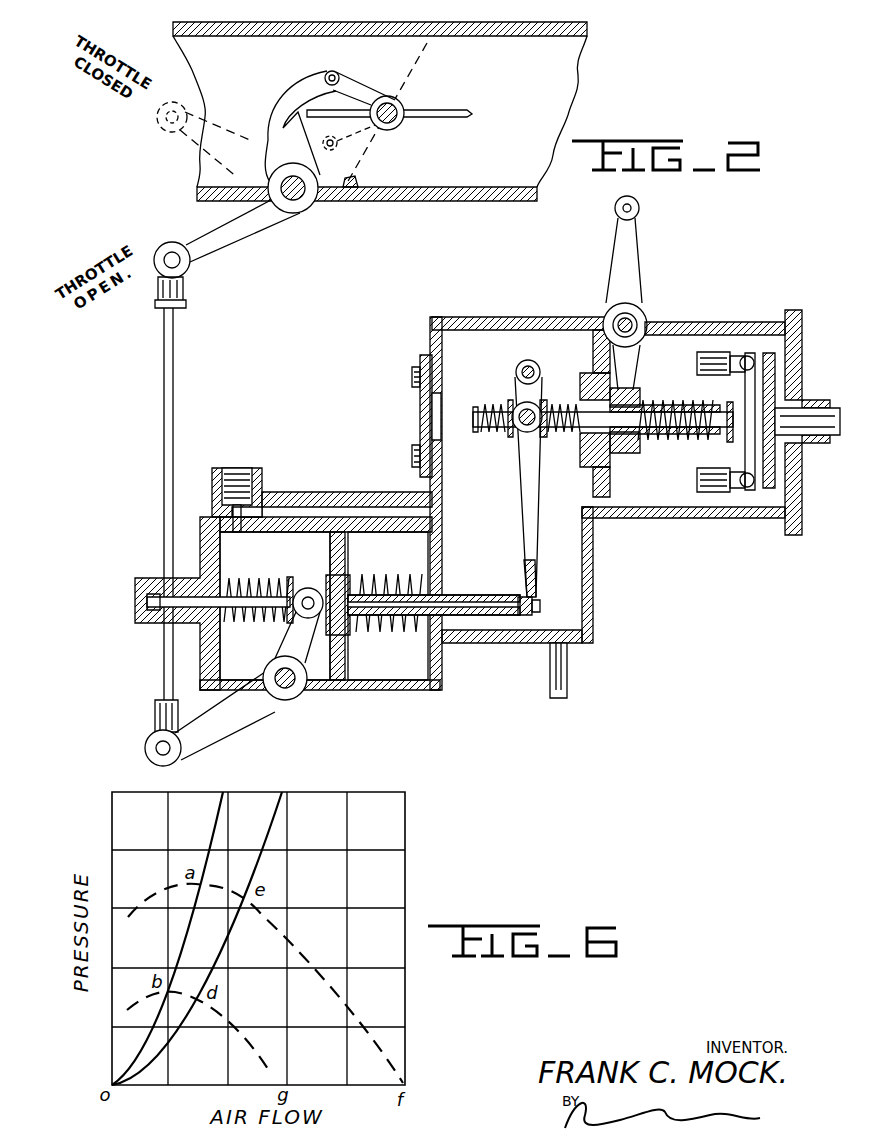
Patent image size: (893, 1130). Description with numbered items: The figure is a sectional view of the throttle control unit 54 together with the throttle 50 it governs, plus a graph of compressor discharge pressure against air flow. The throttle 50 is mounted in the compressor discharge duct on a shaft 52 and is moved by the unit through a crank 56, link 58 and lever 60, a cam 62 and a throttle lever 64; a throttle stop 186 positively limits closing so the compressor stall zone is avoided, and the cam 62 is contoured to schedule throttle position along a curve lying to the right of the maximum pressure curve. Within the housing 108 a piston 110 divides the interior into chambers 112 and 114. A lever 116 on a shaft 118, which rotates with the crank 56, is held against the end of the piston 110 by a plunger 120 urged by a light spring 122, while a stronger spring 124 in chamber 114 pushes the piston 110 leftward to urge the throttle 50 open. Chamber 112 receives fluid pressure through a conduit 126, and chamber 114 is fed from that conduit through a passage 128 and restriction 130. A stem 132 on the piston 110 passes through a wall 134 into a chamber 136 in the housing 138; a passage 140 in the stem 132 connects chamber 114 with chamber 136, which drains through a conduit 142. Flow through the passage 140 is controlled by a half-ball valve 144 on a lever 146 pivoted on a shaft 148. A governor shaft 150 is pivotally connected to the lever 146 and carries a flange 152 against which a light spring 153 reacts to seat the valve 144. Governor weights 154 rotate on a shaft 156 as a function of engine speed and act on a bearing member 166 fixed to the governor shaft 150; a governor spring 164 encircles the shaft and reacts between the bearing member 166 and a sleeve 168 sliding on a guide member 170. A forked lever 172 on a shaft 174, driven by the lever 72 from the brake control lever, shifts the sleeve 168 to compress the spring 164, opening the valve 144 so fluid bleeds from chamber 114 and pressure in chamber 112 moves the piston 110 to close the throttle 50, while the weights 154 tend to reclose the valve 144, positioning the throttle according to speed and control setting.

The throttle 50 is at (462, 108).
The shaft 52 is at (403, 100).
The throttle control unit 54 is at (395, 428).
The crank 56 is at (215, 724).
The link 58 is at (162, 488).
The lever 60 is at (258, 226).
The cam 62 is at (282, 93).
The throttle lever 64 is at (350, 84).
The lever 72 is at (615, 283).
The housing 108 is at (440, 681).
The piston 110 is at (348, 679).
The chamber 112 is at (270, 553).
The chamber 114 is at (368, 553).
The lever 116 is at (287, 636).
The shaft 118 is at (292, 690).
The plunger 120 is at (308, 588).
The spring 122 is at (233, 638).
The spring 124 is at (385, 636).
The conduit 126 is at (237, 523).
The passage 128 is at (363, 512).
The restriction 130 is at (407, 529).
The stem 132 is at (458, 593).
The wall 134 is at (435, 553).
The chamber 136 is at (471, 502).
The housing 138 is at (690, 322).
The passage 140 is at (493, 614).
The conduit 142 is at (587, 680).
The half-ball valve 144 is at (533, 599).
The lever 146 is at (530, 520).
The shaft 148 is at (519, 367).
The governor shaft 150 is at (677, 423).
The flange 152 is at (543, 440).
The spring 153 is at (563, 400).
The governor weights 154 is at (718, 351).
The shaft 156 is at (808, 412).
The governor spring 164 is at (688, 441).
The bearing member 166 is at (718, 449).
The sleeve 168 is at (632, 458).
The governor shaft guide member 170 is at (667, 402).
The forked lever 172 is at (634, 368).
The shaft 174 is at (632, 318).
The throttle stop 186 is at (362, 186).